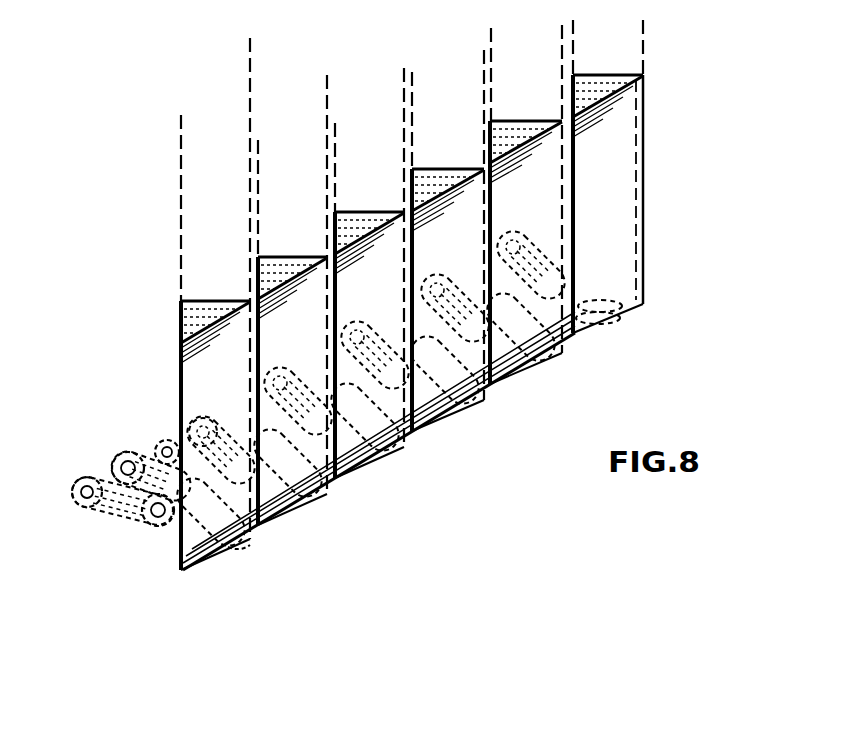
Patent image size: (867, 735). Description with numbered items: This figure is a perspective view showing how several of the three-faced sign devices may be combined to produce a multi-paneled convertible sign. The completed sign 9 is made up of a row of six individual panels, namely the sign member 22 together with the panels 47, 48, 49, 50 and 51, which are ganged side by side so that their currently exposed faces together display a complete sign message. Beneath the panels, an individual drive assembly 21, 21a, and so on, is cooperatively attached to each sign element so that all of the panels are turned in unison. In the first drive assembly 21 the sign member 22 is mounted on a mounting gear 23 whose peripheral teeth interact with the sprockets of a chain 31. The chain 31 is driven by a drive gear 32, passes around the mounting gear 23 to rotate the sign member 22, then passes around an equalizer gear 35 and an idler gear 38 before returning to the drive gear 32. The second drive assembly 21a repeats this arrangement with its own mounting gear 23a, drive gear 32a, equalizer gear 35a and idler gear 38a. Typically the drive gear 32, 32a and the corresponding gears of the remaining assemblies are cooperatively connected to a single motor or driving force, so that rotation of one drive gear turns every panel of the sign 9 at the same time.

The completed sign 9 is at (680, 226).
The drive assembly 21 is at (72, 459).
The drive assembly 21a is at (312, 503).
The sign member 22 is at (195, 358).
The mounting gear 23 is at (216, 560).
The mounting gear 23a is at (308, 500).
The chain 31 is at (248, 412).
The drive gear 32 is at (120, 456).
The drive gear 32a is at (207, 423).
The equalizer gear 35 is at (82, 476).
The equalizer gear 35a is at (163, 440).
The idler gear 38 is at (155, 518).
The idler gear 38a is at (244, 552).
The panel 47 is at (295, 305).
The panel 48 is at (372, 260).
The panel 49 is at (452, 212).
The panel 50 is at (535, 138).
The panel 51 is at (618, 142).